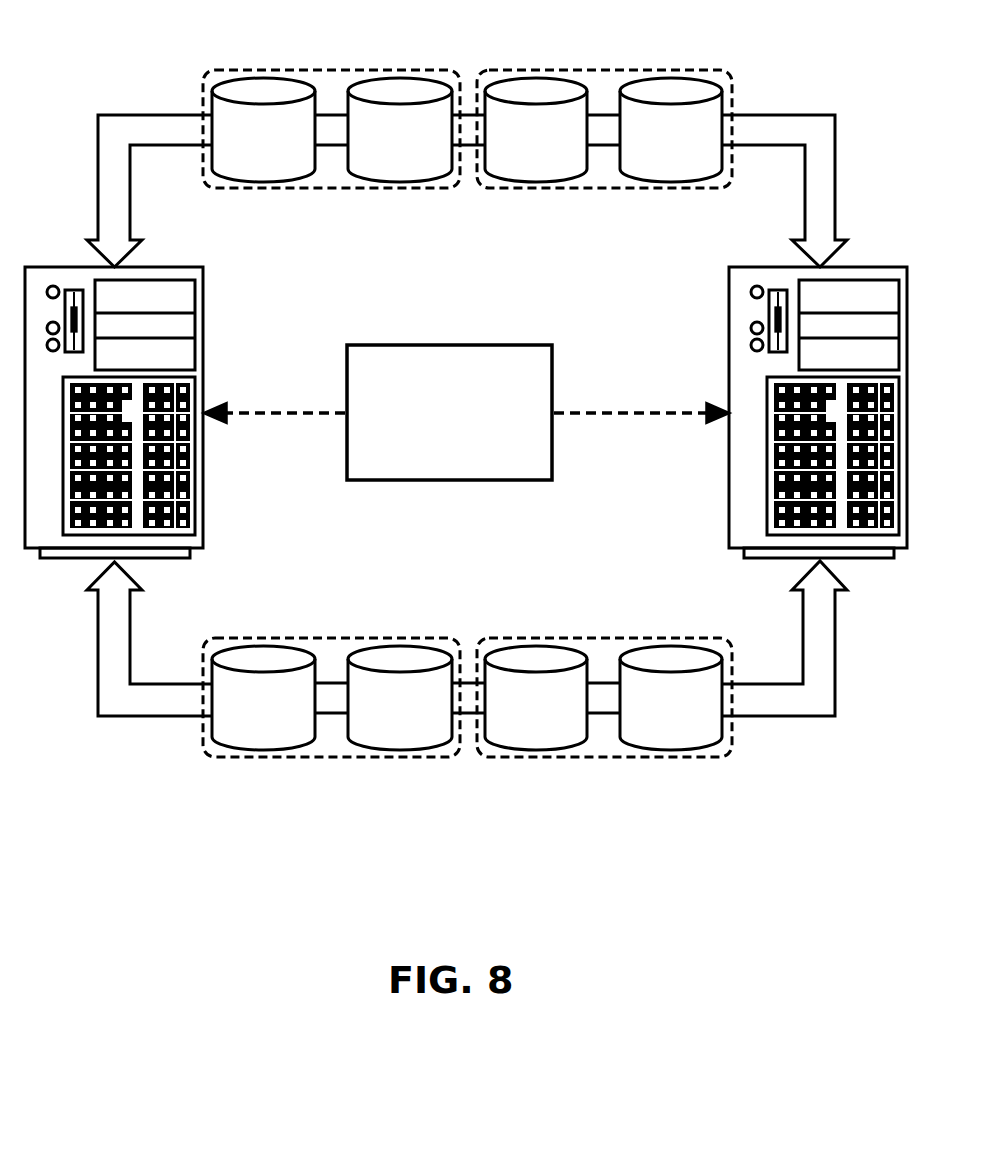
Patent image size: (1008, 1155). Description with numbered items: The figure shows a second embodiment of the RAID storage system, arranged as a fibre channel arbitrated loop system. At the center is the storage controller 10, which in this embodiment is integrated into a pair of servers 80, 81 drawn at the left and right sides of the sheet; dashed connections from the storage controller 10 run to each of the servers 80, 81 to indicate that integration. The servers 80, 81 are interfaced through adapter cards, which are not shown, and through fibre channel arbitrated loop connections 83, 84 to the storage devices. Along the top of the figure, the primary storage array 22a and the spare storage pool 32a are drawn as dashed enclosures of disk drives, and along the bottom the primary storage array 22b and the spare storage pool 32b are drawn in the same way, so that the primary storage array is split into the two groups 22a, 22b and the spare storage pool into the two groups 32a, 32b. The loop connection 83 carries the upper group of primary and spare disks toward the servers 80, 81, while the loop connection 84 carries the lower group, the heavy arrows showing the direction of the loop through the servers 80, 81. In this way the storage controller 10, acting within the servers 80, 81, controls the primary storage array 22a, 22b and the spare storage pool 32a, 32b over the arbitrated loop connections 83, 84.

The storage controller 10 is at (449, 412).
The primary storage array 22a is at (333, 68).
The primary storage array 22b is at (333, 636).
The spare storage pool 32a is at (601, 68).
The spare storage pool 32b is at (601, 636).
The server 80 is at (203, 312).
The server 81 is at (728, 312).
The fibre channel arbitrated loop connection 83 is at (98, 195).
The fibre channel arbitrated loop connection 84 is at (98, 680).